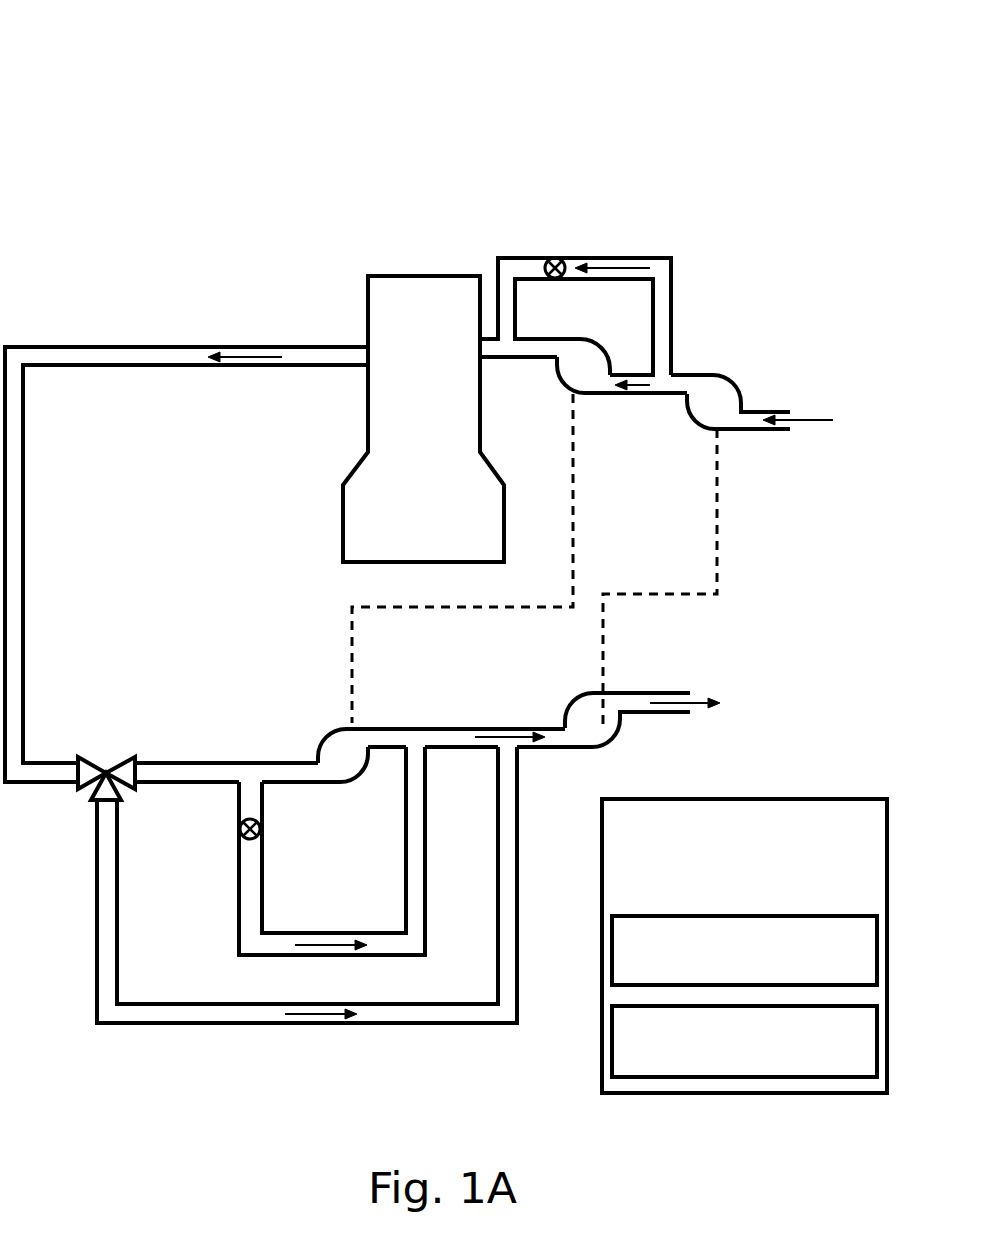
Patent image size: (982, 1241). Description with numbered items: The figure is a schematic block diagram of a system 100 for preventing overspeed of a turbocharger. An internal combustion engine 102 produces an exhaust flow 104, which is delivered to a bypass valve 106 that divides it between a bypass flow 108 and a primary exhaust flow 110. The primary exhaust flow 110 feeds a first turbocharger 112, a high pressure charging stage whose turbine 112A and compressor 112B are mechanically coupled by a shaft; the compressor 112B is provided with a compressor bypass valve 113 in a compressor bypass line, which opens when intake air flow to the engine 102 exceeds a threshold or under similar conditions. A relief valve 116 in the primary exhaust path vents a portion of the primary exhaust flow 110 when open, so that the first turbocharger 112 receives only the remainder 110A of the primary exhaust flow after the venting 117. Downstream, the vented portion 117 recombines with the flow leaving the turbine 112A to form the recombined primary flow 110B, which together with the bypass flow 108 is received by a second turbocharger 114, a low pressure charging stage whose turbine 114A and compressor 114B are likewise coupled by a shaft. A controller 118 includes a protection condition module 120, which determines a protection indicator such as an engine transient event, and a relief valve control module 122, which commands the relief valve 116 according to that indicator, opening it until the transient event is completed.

The system 100 is at (143, 83).
The internal combustion engine 102 is at (406, 276).
The exhaust flow 104 is at (178, 347).
The bypass valve 106 is at (84, 757).
The bypass flow 108 is at (97, 907).
The primary exhaust flow 110 is at (213, 763).
The remainder of the primary exhaust flow 110A is at (278, 763).
The recombined primary flow 110B is at (455, 728).
The first turbocharger 112 is at (352, 607).
The turbine 112A is at (344, 727).
The compressor 112B is at (582, 339).
The compressor bypass valve 113 is at (555, 258).
The second turbocharger 114 is at (720, 593).
The turbine 114A is at (578, 694).
The compressor 114B is at (716, 375).
The relief valve 116 is at (262, 829).
The vented portion 117 is at (239, 884).
The controller 118 is at (721, 872).
The protection condition module 120 is at (729, 971).
The relief valve control module 122 is at (729, 1063).